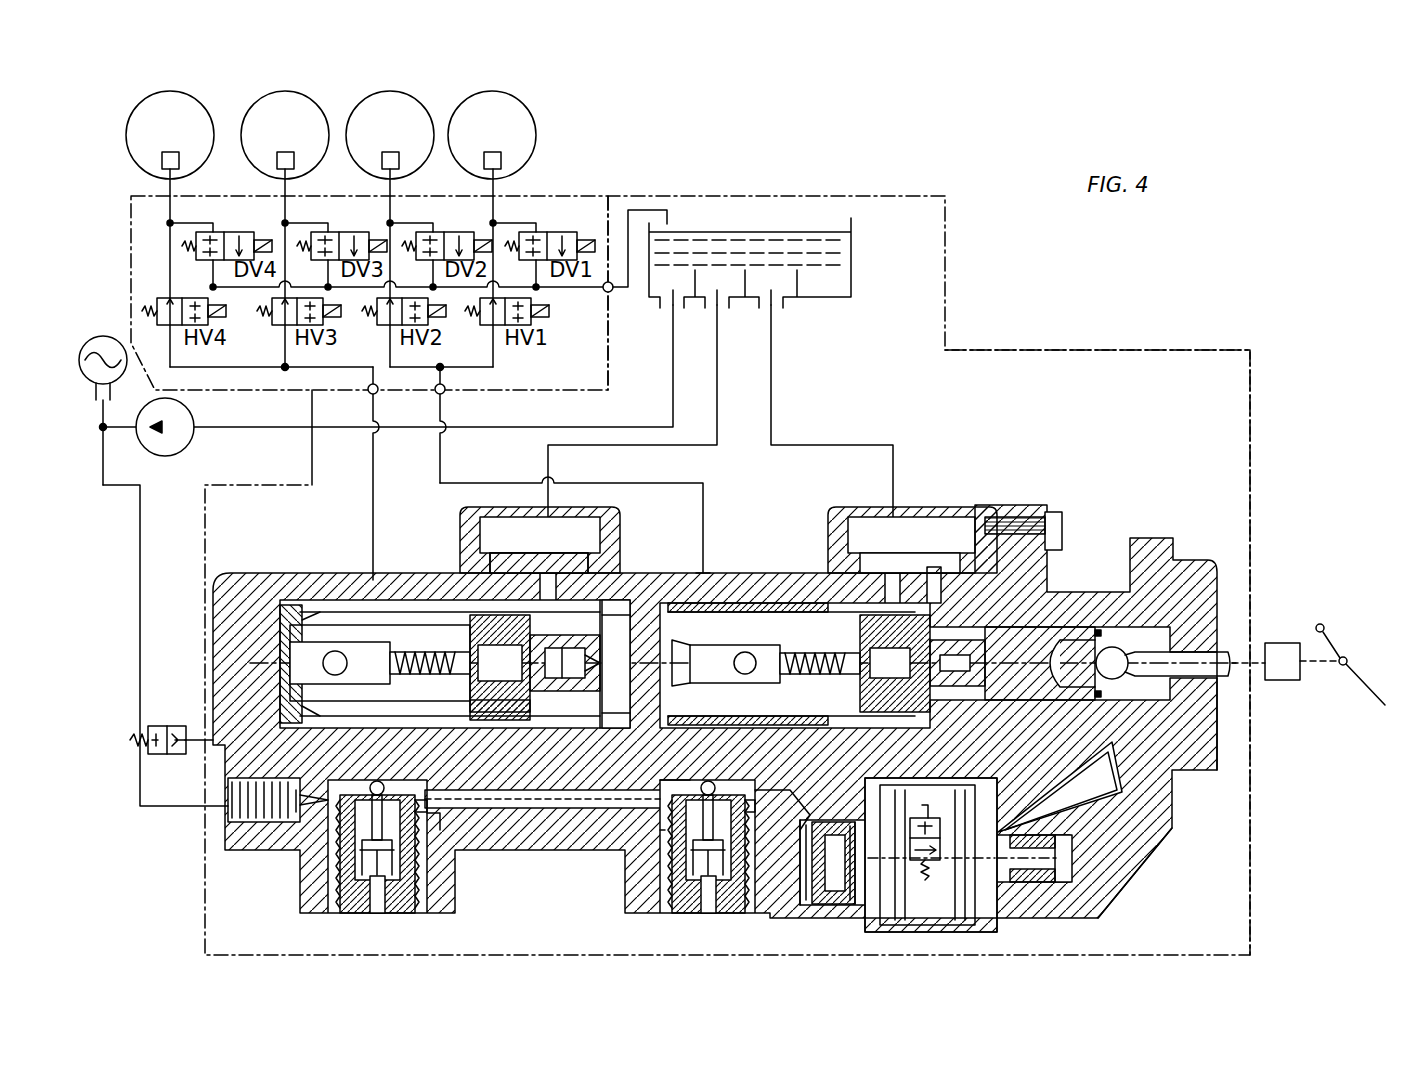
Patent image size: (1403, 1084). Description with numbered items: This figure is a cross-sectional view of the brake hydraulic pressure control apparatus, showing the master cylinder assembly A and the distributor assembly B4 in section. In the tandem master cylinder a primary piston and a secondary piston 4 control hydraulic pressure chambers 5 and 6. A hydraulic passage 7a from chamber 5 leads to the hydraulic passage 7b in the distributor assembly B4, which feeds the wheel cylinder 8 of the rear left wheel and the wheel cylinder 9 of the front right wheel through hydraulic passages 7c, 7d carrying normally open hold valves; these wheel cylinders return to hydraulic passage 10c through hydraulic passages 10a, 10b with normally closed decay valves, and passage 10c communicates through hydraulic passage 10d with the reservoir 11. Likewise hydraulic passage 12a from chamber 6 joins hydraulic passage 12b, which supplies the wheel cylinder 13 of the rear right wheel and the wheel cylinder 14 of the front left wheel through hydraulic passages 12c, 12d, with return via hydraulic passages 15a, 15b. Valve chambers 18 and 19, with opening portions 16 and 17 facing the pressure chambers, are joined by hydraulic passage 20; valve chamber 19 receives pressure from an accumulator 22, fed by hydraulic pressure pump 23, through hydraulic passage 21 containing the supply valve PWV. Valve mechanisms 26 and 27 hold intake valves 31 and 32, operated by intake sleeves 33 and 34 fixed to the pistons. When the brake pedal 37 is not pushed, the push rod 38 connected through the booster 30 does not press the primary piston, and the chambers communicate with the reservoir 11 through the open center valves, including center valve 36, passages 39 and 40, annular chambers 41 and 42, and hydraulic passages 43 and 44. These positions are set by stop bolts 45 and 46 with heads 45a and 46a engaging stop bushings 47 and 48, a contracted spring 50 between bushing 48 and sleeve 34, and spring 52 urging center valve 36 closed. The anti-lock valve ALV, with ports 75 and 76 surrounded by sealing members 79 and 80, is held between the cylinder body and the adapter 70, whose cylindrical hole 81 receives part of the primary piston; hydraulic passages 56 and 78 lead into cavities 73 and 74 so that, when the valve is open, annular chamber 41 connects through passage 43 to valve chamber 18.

The secondary piston 4 is at (607, 730).
The hydraulic pressure chamber 5 is at (757, 612).
The hydraulic pressure chamber 6 is at (430, 612).
The hydraulic passage 7a is at (443, 450).
The hydraulic passage 7b is at (445, 392).
The hydraulic passage 7c is at (505, 355).
The hydraulic passage 7d is at (400, 355).
The wheel cylinder 8 is at (501, 158).
The wheel cylinder 9 is at (399, 160).
The hydraulic passage 10a is at (539, 230).
The hydraulic passage 10b is at (432, 230).
The hydraulic passage 10c is at (590, 292).
The hydraulic passage 10d is at (640, 207).
The reservoir 11 is at (855, 232).
The hydraulic passage 12a is at (375, 460).
The hydraulic passage 12b is at (290, 372).
The hydraulic passage 12c is at (295, 355).
The hydraulic passage 12d is at (190, 355).
The wheel cylinder 13 is at (277, 160).
The wheel cylinder 14 is at (162, 160).
The hydraulic passage 15a is at (328, 230).
The hydraulic passage 15b is at (218, 230).
The opening portion 16 is at (700, 770).
The opening portion 17 is at (368, 786).
The valve chamber 18 is at (680, 790).
The valve chamber 19 is at (275, 800).
The hydraulic passage 20 is at (596, 810).
The hydraulic passage 21 is at (140, 530).
The accumulator 22 is at (101, 335).
The hydraulic pressure pump 23 is at (178, 452).
The valve mechanism 26 is at (748, 765).
The valve mechanism 27 is at (415, 770).
The booster 30 is at (1285, 643).
The intake valve 31 is at (600, 822).
The intake valve 32 is at (432, 822).
The intake sleeve 33 is at (780, 603).
The intake sleeve 34 is at (412, 600).
The center valve 36 is at (548, 690).
The brake pedal 37 is at (1342, 667).
The push rod 38 is at (1232, 655).
The passage 39 is at (1000, 650).
The passage 40 is at (628, 660).
The annular chamber 41 is at (938, 600).
The annular chamber 42 is at (615, 573).
The hydraulic passage 43 is at (895, 490).
The hydraulic passage 44 is at (546, 468).
The stop bolt 45 is at (795, 683).
The head 45a is at (795, 635).
The stop bolt 46 is at (415, 678).
The head 46a is at (392, 632).
The stop bushing 47 is at (688, 600).
The stop bushing 48 is at (280, 622).
The contracted spring 50 is at (462, 728).
The spring 52 is at (500, 712).
The hydraulic passage 56 is at (790, 812).
The adapter 70 is at (1190, 565).
The cavity 73 is at (812, 888).
The cavity 74 is at (1105, 895).
The port 75 is at (812, 850).
The port 76 is at (1060, 855).
The hydraulic passage 78 is at (1120, 785).
The sealing member 79 is at (853, 906).
The sealing member 80 is at (1048, 882).
The cylindrical hole 81 is at (1222, 690).
The master cylinder assembly A is at (1028, 350).
The distributor assembly B4 is at (572, 196).
The supply valve PWV is at (171, 726).
The anti-lock valve ALV is at (931, 855).